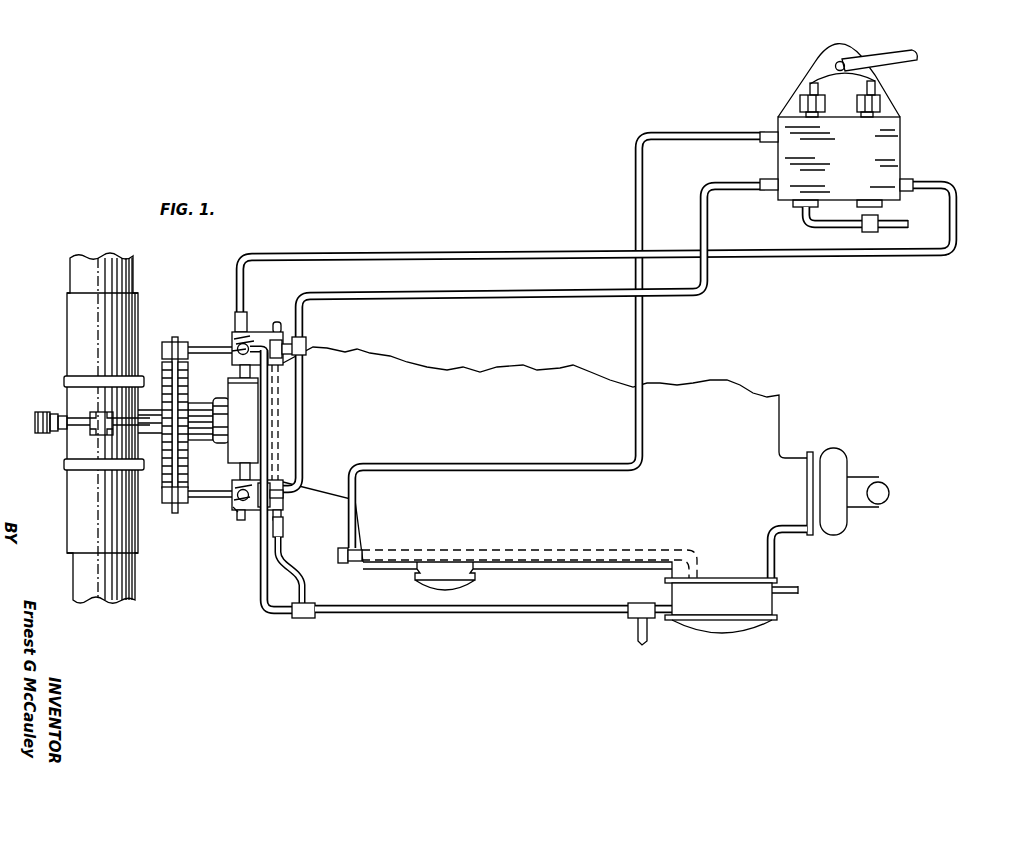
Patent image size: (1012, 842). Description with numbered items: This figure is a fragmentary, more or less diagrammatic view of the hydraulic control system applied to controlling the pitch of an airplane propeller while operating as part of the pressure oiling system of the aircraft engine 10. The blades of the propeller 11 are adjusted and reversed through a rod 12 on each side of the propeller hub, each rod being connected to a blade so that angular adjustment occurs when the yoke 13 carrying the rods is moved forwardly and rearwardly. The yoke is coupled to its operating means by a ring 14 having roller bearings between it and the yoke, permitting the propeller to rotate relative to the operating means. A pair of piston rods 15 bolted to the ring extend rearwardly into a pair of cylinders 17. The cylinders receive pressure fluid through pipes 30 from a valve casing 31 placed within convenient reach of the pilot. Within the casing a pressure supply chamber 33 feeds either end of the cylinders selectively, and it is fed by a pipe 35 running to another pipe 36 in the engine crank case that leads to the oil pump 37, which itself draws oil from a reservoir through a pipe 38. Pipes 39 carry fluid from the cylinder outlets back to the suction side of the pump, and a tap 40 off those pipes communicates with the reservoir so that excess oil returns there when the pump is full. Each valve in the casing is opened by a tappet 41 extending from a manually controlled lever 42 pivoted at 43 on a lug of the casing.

The aircraft engine 10 is at (418, 373).
The propeller 11 is at (128, 277).
The rod 12 is at (110, 413).
The yoke 13 is at (186, 453).
The ring 14 is at (185, 362).
The piston rods 15 is at (197, 500).
The cylinders 17 is at (233, 507).
The pipes 30 is at (307, 257).
The valve casing 31 is at (892, 152).
The pressure supply chamber 33 is at (884, 205).
The pipe 35 is at (640, 347).
The pipe 36 is at (543, 555).
The oil pump 37 is at (773, 605).
The pipe 38 is at (798, 588).
The pipes 39 is at (284, 543).
The tap 40 is at (647, 641).
The tappet 41 is at (877, 76).
The lever 42 is at (902, 52).
The pivot 43 is at (836, 66).